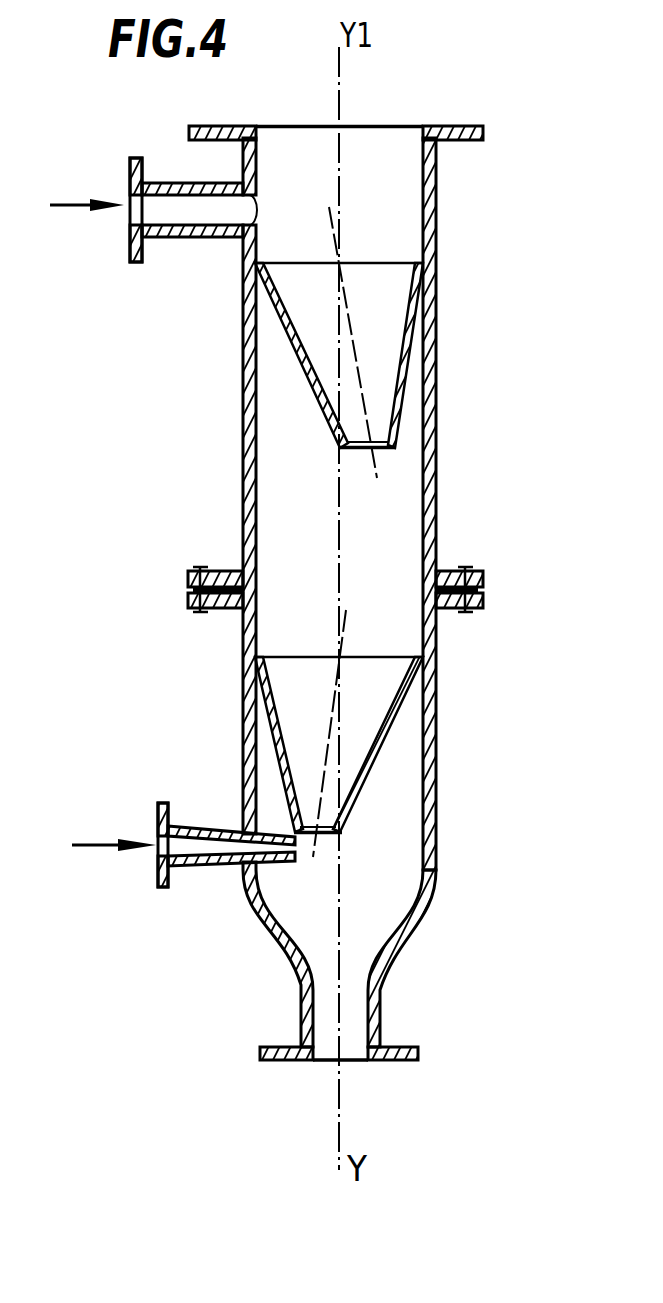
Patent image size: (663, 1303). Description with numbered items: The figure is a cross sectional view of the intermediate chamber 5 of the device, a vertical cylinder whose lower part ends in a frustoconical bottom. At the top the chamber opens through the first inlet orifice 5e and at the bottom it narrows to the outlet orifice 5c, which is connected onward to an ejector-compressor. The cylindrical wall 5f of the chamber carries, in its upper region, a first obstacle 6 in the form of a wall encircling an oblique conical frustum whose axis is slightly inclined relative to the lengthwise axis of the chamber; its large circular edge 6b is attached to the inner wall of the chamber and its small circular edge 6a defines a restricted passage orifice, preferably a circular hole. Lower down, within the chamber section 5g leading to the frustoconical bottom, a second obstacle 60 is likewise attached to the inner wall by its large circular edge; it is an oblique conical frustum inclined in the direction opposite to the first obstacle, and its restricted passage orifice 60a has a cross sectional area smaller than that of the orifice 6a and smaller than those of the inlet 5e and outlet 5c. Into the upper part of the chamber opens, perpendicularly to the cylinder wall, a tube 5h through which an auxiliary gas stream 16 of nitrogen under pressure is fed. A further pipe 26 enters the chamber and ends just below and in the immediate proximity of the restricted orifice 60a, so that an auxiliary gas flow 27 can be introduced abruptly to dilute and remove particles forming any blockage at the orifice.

The intermediate chamber 5 is at (195, 427).
The first inlet orifice 5e is at (375, 142).
The cylindrical wall of vessel 5f is at (428, 378).
The lower wall section of vessel 5g is at (428, 843).
The tube 5h is at (187, 232).
The outlet orifice 5c is at (348, 1058).
The feed stream 16 is at (72, 203).
The first obstacle 6 is at (318, 395).
The restricted passage orifice 6a is at (358, 450).
The large circular edge 6b is at (418, 260).
The second obstacle 60 is at (273, 707).
The restricted passage orifice 60a is at (322, 836).
The injection nozzle 26 is at (192, 867).
The injected fluid stream 27 is at (93, 845).